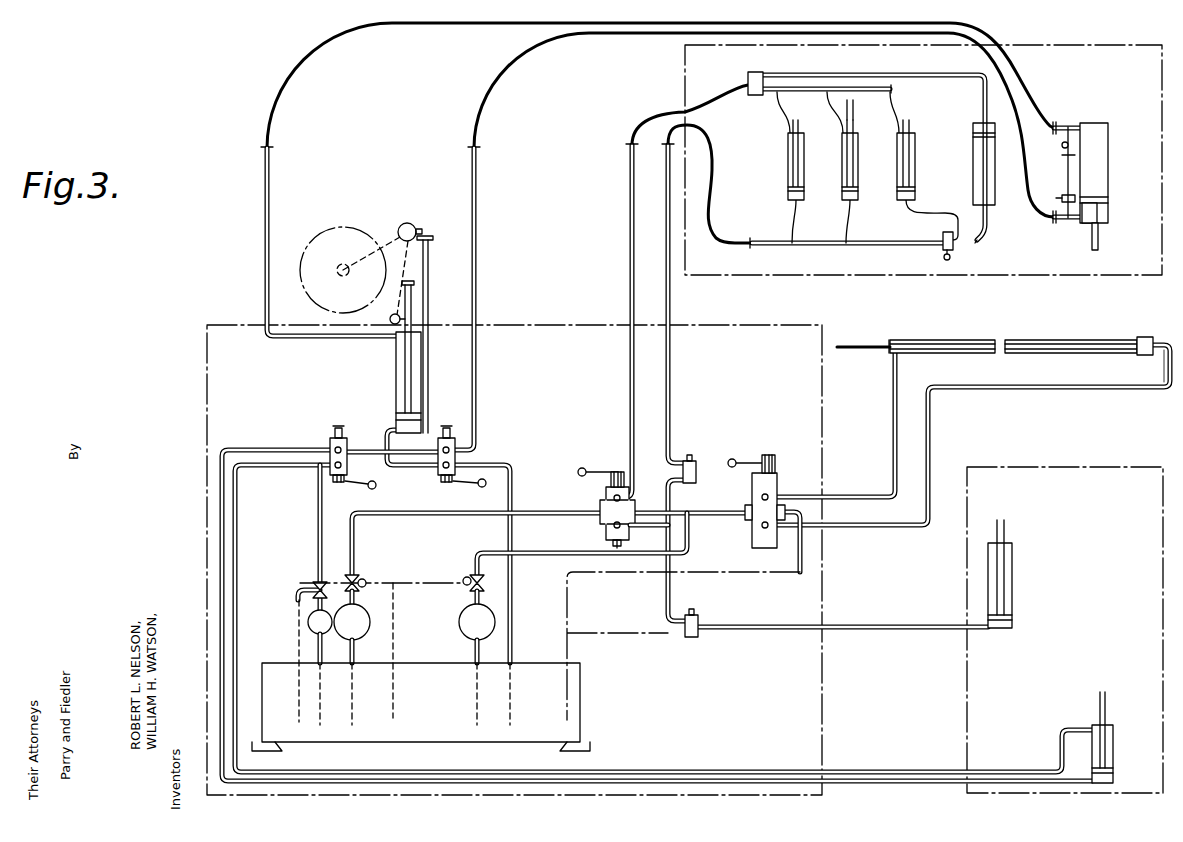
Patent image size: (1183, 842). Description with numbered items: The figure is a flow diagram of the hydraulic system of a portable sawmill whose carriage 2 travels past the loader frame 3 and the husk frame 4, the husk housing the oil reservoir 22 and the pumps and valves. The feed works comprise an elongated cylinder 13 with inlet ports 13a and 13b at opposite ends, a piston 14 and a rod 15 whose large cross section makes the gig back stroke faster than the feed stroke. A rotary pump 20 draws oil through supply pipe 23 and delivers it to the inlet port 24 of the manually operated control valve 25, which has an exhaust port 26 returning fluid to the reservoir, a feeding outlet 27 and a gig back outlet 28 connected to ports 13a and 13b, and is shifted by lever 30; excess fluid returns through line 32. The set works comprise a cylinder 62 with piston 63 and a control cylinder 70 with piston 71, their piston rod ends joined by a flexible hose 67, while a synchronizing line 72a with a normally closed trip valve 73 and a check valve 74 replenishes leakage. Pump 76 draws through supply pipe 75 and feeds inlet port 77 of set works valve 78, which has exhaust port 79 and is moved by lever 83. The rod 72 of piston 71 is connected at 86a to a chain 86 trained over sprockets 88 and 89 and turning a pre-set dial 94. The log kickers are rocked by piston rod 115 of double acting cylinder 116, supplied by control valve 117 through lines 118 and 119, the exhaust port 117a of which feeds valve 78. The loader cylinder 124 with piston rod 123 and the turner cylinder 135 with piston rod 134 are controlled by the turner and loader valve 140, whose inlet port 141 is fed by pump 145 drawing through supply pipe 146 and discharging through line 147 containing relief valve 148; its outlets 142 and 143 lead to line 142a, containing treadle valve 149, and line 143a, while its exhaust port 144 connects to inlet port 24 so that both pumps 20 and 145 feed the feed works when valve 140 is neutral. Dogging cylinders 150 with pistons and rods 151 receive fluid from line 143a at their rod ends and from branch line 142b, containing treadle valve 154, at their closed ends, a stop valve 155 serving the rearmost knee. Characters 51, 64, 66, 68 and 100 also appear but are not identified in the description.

The carriage 2 is at (1001, 275).
The loader frame 3 is at (980, 701).
The husk frame 4 is at (823, 712).
The elongated cylinder 13 is at (1045, 340).
The inlet port 13a is at (1158, 339).
The inlet port 13b is at (890, 353).
The piston 14 is at (1150, 352).
The piston rod 15 is at (879, 346).
The rotary pump 20 is at (462, 632).
The reservoir 22 is at (581, 721).
The supply pipe 23 is at (478, 656).
The inlet port 24 is at (746, 521).
The control valve 25 is at (768, 482).
The exhaust port 26 is at (806, 513).
The feeding outlet 27 is at (781, 526).
The gig back outlet 28 is at (778, 496).
The lever 30 is at (741, 460).
The line 32 is at (383, 595).
The valve 51 is at (472, 578).
The set works cylinder 62 is at (1108, 160).
The piston 63 is at (1098, 198).
The rod 64 is at (1099, 240).
The crank arm 66 is at (392, 237).
The flexible hose 67 is at (447, 24).
The pipe 68 is at (615, 34).
The set works control cylinder 70 is at (395, 378).
The piston 71 is at (395, 412).
The piston rod 72 is at (413, 357).
The synchronizing line 72a is at (1070, 173).
The trip valve 73 is at (1061, 199).
The check valve 74 is at (1069, 145).
The supply pipe 75 is at (318, 648).
The rotary pump 76 is at (309, 620).
The inlet port 77 is at (376, 487).
The control valve 78 is at (456, 450).
The exhaust port 79 is at (470, 468).
The lever 83 is at (468, 493).
The chain 86 is at (331, 242).
The connection 86a is at (410, 284).
The sprocket 88 is at (357, 270).
The sprocket 89 is at (414, 229).
The pre-set dial 94 is at (426, 236).
The crank disc 100 is at (321, 237).
The piston rod 115 is at (1100, 697).
The hydraulic piston and cylinder device 116 is at (1113, 730).
The control valve 117 is at (328, 458).
The exhaust port 117a is at (358, 447).
The line 118 is at (1060, 750).
The line 119 is at (915, 779).
The piston rod 123 is at (1005, 548).
The loader cylinder 124 is at (1013, 600).
The piston rod 134 is at (985, 249).
The turner cylinder 135 is at (972, 140).
The turner and loader control valve 140 is at (604, 502).
The inlet port 141 is at (603, 516).
The outlet 142 is at (615, 547).
The line 142a is at (671, 597).
The branch line 142b is at (670, 405).
The outlet 143 is at (611, 486).
The line 143a is at (632, 370).
The exhaust port 144 is at (624, 498).
The pump 145 is at (372, 622).
The supply pipe 146 is at (360, 658).
The line 147 is at (355, 547).
The relief valve 148 is at (360, 578).
The treadle operated valve 149 is at (695, 637).
The dogging cylinder 150 is at (787, 170).
The piston and rod 151 is at (850, 126).
The treadle operated valve 154 is at (690, 458).
The stop valve 155 is at (942, 243).